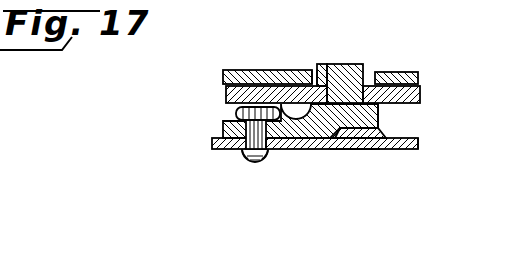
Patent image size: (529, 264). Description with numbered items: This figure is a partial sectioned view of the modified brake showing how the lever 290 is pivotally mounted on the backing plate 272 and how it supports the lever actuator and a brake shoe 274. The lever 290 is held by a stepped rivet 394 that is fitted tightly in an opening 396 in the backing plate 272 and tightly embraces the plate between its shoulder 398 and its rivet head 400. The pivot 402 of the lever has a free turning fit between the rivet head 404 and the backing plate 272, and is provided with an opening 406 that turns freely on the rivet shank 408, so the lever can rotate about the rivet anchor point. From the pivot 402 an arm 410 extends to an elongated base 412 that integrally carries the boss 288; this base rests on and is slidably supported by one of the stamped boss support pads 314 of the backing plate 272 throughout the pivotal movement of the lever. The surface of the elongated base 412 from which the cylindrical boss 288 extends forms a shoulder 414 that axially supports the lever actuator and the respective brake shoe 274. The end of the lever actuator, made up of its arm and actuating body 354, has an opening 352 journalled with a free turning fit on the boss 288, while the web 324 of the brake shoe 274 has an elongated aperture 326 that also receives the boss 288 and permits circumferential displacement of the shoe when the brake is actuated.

The backing plate 272 is at (413, 152).
The brake shoe 274 is at (422, 73).
The boss 288 is at (343, 64).
The lever 290 is at (316, 73).
The boss support pad 314 is at (364, 148).
The web 324 is at (252, 70).
The elongated aperture 326 is at (322, 68).
The opening 352 is at (376, 73).
The actuating body 354 is at (418, 90).
The stepped rivet 394 is at (263, 158).
The opening 396 is at (247, 158).
The shoulder 398 is at (273, 143).
The rivet head 400 is at (253, 163).
The pivot 402 is at (222, 130).
The rivet head 404 is at (224, 104).
The opening 406 is at (215, 143).
The rivet shank 408 is at (222, 120).
The arm 410 is at (317, 150).
The elongated base 412 is at (380, 126).
The shoulder 414 is at (380, 105).